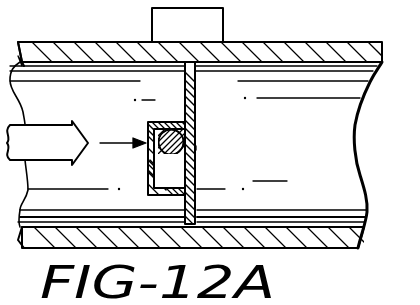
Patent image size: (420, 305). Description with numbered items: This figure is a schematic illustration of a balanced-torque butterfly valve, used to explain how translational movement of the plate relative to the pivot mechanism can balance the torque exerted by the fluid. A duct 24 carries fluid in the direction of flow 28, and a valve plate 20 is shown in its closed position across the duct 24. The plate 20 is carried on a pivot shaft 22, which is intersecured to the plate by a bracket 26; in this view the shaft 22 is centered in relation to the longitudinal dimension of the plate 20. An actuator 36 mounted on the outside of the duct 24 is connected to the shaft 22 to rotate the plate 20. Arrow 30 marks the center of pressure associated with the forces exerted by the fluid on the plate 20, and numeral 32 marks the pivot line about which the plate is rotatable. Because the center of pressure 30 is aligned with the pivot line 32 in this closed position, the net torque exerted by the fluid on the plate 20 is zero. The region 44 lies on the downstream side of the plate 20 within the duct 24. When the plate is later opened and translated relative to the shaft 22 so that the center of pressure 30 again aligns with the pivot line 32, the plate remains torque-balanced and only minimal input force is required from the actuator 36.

The valve plate 20 is at (196, 93).
The pivot shaft 22 is at (148, 166).
The duct 24 is at (270, 41).
The bracket 26 is at (156, 122).
The direction of flow 28 is at (50, 125).
The center of pressure 30 is at (123, 141).
The pivot line 32 is at (198, 148).
The actuator 36 is at (152, 22).
The downstream region 44 is at (270, 170).